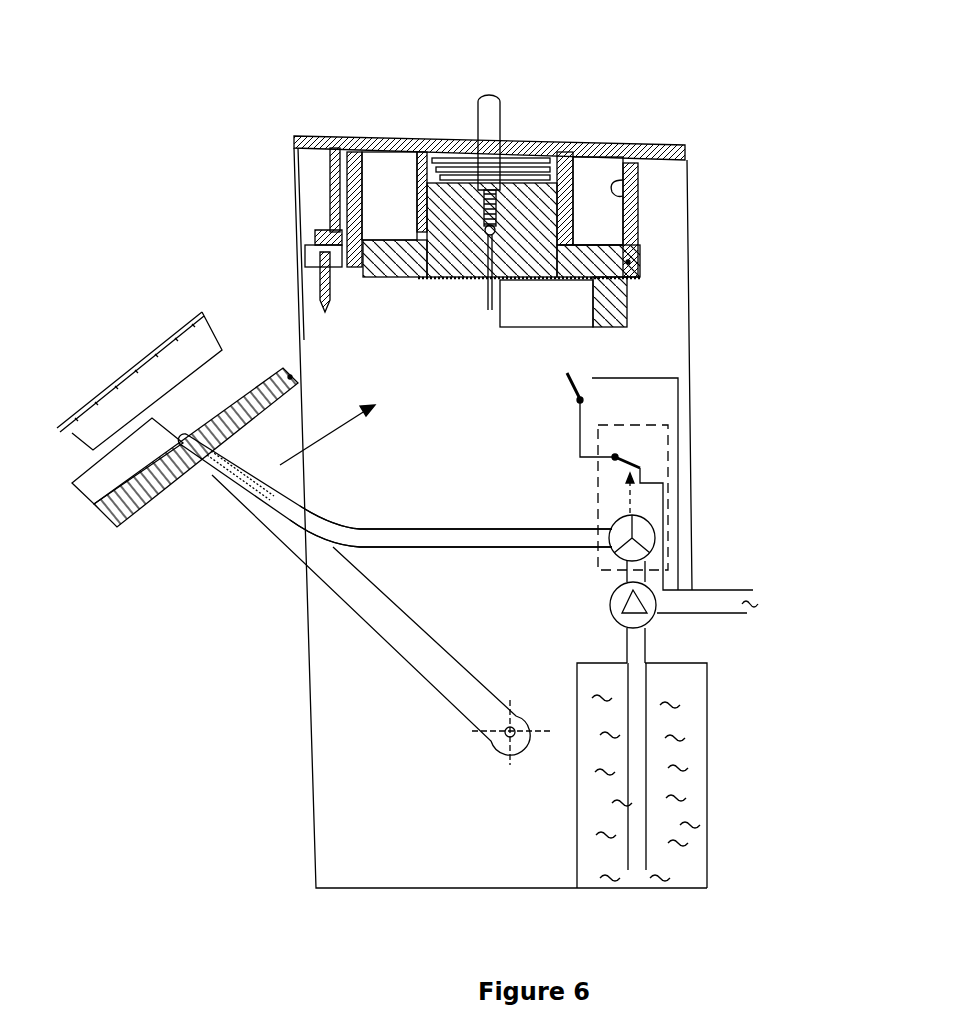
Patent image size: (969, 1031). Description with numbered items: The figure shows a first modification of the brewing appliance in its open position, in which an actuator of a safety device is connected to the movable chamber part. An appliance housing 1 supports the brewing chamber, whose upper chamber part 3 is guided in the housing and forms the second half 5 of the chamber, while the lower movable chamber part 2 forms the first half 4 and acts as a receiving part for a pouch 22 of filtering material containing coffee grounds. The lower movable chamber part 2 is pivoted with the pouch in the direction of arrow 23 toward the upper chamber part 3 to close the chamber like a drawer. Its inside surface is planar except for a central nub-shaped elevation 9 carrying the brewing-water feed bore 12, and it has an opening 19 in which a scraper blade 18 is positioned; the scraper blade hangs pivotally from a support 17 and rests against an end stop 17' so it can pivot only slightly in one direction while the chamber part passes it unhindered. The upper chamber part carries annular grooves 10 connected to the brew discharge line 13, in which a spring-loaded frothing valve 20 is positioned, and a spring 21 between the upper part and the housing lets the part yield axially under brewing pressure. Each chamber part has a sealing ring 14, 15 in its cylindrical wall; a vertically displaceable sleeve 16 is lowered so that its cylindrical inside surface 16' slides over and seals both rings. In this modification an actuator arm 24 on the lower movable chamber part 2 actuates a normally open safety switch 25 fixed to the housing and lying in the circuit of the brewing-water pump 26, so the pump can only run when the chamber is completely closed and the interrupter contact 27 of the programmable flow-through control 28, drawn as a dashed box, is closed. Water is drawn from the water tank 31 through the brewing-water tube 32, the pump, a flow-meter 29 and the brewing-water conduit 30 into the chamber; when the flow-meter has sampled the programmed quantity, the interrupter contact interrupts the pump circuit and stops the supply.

The appliance housing 1 is at (655, 146).
The frothing valve 20 is at (332, 138).
The spring 21 is at (440, 158).
The cylindrical inside surface 16' is at (692, 167).
The cylindrical sleeve 16 is at (725, 220).
The sealing ring 15 is at (640, 263).
The upper chamber part 3 is at (625, 290).
The second half 5 is at (627, 323).
The annular grooves 10 is at (437, 277).
The brew discharge line 13 is at (490, 278).
The support 17 is at (237, 204).
The end stop 17' is at (269, 241).
The scraper blade 18 is at (325, 272).
The pouch 22 is at (153, 380).
The nub-shaped elevation 9 is at (193, 433).
The actuator arm 24 is at (283, 432).
The arrow 23 is at (327, 436).
The opening 19 is at (88, 487).
The first half 4 is at (105, 502).
The sealing ring 14 is at (110, 520).
The lower movable chamber part 2 is at (148, 490).
The brewing-water feed bore 12 is at (213, 473).
The safety switch 25 is at (567, 385).
The interrupter contact 27 is at (640, 468).
The programmable flow-through control 28 is at (612, 477).
The flow-meter 29 is at (655, 530).
The brewing-water conduit 30 is at (525, 539).
The brewing-water pump 26 is at (655, 610).
The water tank 31 is at (680, 700).
The brewing-water tube 32 is at (640, 743).